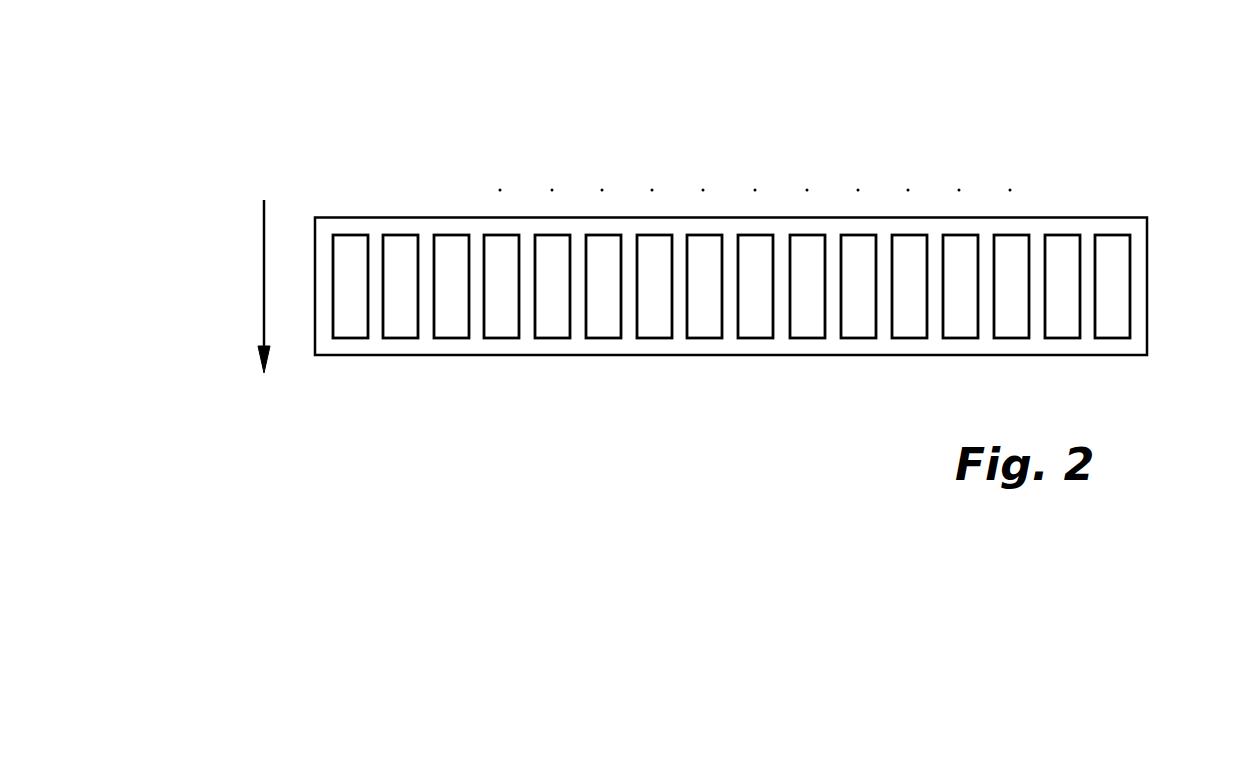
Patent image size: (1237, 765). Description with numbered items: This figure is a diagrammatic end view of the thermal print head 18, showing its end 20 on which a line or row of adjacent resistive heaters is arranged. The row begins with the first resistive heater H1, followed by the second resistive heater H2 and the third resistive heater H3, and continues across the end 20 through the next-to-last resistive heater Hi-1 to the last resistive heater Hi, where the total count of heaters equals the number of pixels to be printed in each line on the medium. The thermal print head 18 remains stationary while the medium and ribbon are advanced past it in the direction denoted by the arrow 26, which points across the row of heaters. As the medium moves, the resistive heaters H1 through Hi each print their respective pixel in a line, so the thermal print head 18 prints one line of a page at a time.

The thermal print head 18 is at (1118, 110).
The end of thermal print head 20 is at (547, 343).
The arrow 26 is at (262, 260).
The first resistive heater H1 is at (350, 253).
The second resistive heater H2 is at (401, 253).
The third resistive heater H3 is at (452, 253).
The next-to-last resistive heater Hi-1 is at (1063, 253).
The last resistive heater Hi is at (1113, 253).